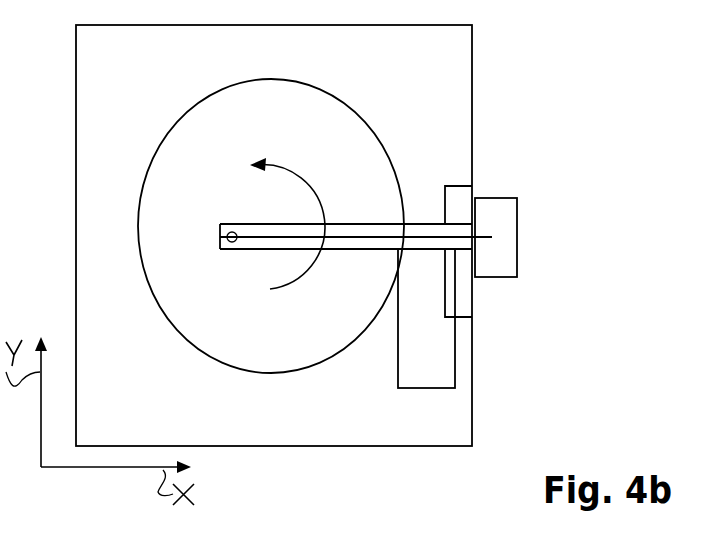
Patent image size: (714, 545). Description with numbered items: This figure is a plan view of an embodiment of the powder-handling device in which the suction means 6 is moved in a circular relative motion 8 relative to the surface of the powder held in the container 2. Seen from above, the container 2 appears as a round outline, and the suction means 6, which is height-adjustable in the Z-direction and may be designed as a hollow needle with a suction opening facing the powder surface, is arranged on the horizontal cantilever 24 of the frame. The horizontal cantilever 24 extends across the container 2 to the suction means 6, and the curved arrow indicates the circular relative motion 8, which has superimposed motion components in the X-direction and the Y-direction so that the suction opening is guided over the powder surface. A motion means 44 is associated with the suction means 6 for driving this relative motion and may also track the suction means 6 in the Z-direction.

The container 2 is at (157, 150).
The suction means 6 is at (228, 232).
The relative motion 8 is at (265, 290).
The horizontal cantilever 24 is at (422, 222).
The motion means 44 is at (438, 340).